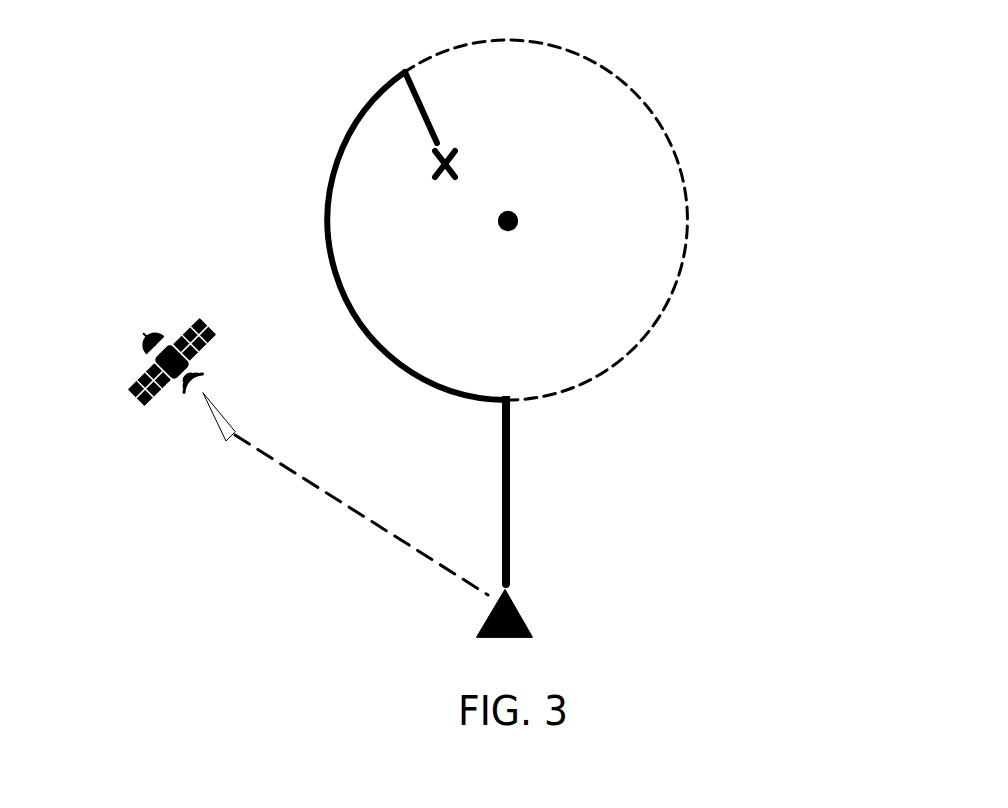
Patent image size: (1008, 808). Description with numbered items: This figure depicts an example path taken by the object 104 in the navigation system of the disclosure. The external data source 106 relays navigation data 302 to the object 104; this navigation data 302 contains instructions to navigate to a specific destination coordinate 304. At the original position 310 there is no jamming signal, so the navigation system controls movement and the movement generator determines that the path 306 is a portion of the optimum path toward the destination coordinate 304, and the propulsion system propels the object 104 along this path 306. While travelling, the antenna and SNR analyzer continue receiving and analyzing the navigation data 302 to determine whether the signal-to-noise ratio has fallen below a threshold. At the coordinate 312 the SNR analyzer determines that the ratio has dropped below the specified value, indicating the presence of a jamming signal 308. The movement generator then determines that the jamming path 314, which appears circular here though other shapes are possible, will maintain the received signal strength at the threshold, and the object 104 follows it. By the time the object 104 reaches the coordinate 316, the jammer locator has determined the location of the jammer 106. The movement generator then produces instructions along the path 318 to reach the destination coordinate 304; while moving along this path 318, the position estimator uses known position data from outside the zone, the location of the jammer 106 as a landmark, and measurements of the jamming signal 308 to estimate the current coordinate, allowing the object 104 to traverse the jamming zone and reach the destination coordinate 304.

The object 104 is at (457, 610).
The external data source / jammer 106 is at (515, 213).
The navigation data 302 is at (330, 509).
The destination coordinate 304 is at (455, 150).
The path 306 is at (547, 427).
The jamming signal 308 is at (546, 220).
The original position 310 is at (542, 623).
The coordinate 312 is at (514, 401).
The jamming path 314 is at (302, 217).
The coordinate 316 is at (398, 72).
The path 318 is at (452, 82).